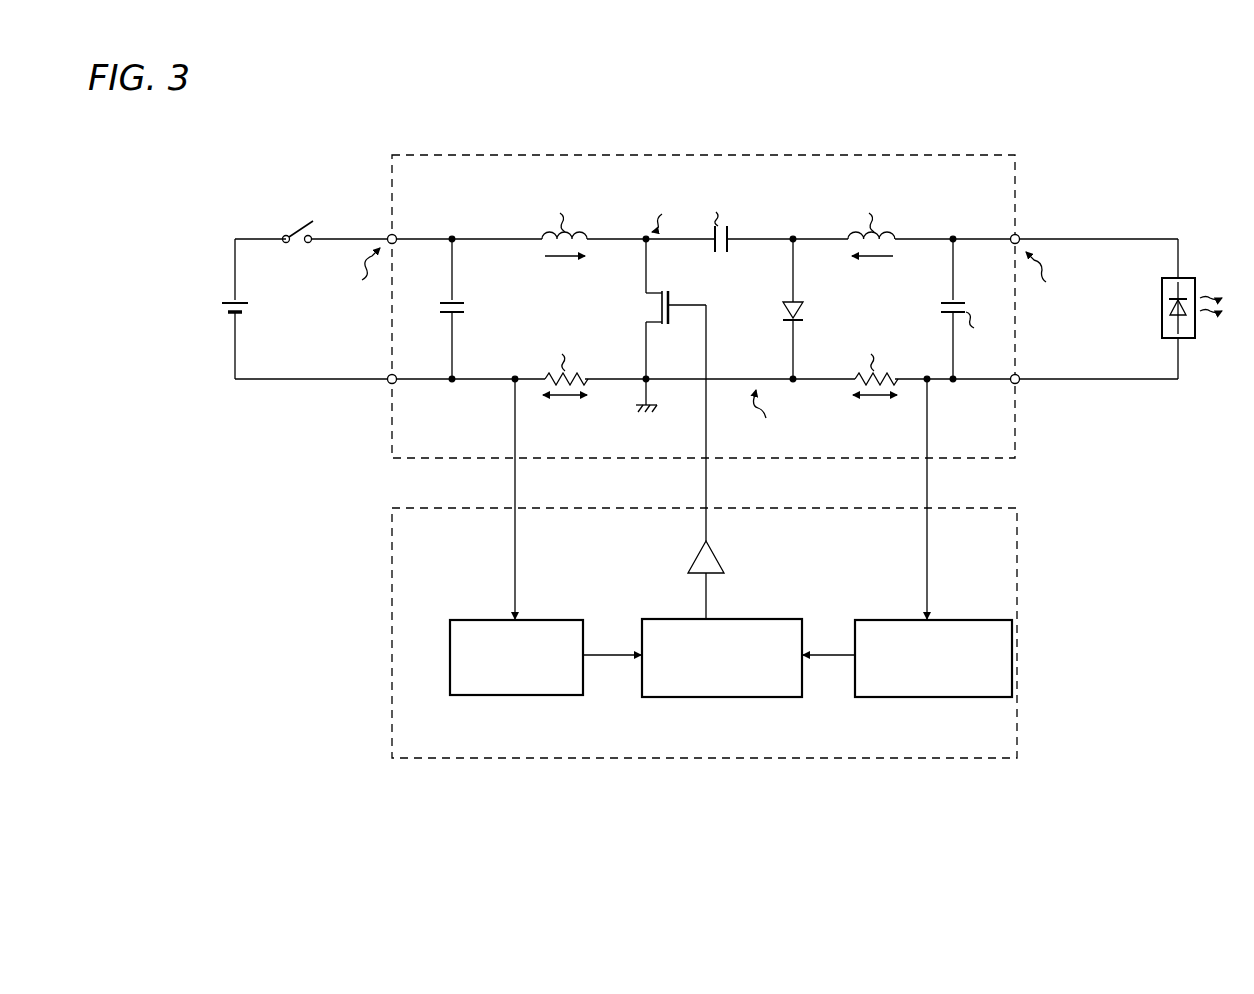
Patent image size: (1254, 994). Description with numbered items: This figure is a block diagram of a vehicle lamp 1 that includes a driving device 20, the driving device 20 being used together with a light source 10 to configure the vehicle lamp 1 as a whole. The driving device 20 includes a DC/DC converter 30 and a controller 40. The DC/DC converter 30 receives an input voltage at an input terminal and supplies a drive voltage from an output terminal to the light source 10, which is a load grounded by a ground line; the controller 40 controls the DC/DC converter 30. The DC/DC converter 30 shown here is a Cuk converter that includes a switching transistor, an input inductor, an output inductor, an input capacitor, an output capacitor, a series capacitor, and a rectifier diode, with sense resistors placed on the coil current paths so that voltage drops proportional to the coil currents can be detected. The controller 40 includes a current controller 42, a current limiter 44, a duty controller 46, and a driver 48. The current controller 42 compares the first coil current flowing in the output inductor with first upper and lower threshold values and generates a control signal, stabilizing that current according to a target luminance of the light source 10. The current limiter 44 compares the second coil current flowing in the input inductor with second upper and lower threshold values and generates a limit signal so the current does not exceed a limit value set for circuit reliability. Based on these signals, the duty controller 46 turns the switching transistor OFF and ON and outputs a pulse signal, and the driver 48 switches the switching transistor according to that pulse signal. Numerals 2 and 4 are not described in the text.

The vehicle lamp 1 is at (1225, 137).
The battery 2 is at (222, 304).
The switch 4 is at (285, 230).
The light source 10 is at (1186, 278).
The driving device 20 is at (1017, 826).
The DC/DC converter 30 is at (850, 155).
The controller 40 is at (478, 758).
The current controller 42 is at (962, 619).
The current limiter 44 is at (545, 619).
The duty controller 46 is at (706, 697).
The driver 48 is at (712, 562).